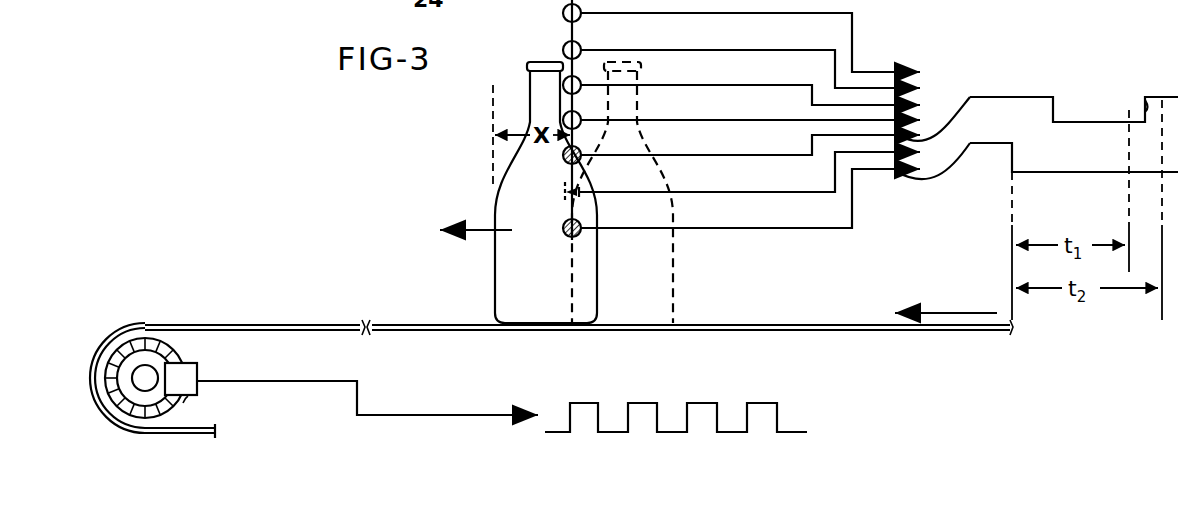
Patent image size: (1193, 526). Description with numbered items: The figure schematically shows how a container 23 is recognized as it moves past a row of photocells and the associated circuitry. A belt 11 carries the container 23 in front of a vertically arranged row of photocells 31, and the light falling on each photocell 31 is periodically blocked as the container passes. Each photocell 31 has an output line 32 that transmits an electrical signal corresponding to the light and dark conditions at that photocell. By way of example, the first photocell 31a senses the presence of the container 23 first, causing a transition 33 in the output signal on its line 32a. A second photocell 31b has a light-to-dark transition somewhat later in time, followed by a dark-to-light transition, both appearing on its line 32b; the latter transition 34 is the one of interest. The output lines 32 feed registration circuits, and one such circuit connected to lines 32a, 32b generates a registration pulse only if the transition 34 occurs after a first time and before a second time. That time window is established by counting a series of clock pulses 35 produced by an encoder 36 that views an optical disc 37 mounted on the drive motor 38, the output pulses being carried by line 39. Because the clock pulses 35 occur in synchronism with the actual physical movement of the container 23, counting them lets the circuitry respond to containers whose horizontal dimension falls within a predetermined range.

The conveyor 11 is at (785, 332).
The container 23 is at (537, 82).
The photocell 31 is at (563, 50).
The first photocell 31a is at (567, 237).
The second photocell 31b is at (563, 158).
The output line 32 is at (880, 104).
The output line of first photocell 32a is at (727, 230).
The output line of second photocell 32b is at (710, 194).
The transition 33 is at (1012, 157).
The transition 34 is at (1150, 97).
The clock pulses 35 is at (760, 403).
The encoder 36 is at (197, 368).
The optical disc 37 is at (117, 350).
The drive motor 38 is at (183, 403).
The line 39 is at (465, 412).